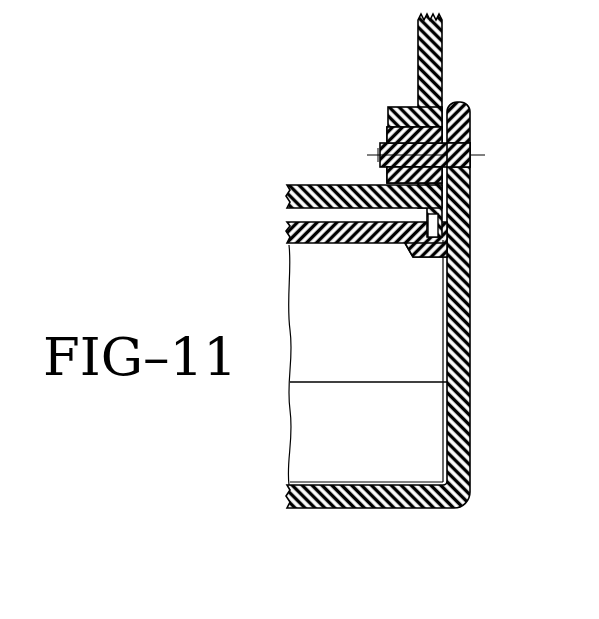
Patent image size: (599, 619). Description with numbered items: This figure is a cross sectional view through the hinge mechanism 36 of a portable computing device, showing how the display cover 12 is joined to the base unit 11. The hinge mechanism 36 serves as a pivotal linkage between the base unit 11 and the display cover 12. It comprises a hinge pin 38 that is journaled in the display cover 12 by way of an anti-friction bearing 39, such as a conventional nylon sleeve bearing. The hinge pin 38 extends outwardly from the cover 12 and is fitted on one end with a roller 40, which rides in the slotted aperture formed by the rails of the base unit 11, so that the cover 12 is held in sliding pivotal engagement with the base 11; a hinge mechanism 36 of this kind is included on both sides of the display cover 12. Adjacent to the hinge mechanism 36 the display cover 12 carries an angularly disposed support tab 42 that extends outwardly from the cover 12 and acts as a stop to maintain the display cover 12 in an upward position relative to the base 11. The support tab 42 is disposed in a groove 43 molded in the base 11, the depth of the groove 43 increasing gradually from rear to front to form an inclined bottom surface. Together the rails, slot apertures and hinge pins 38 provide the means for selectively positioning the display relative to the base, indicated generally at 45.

The base unit 11 is at (352, 497).
The display cover 12 is at (428, 43).
The hinge mechanism 36 is at (484, 118).
The hinge pin 38 is at (467, 142).
The anti-friction bearing 39 is at (396, 135).
The roller 40 is at (465, 173).
The support tab 42 is at (443, 218).
The groove 43 is at (410, 256).
The means for selectively positioning the display relative to the base 45 is at (362, 175).